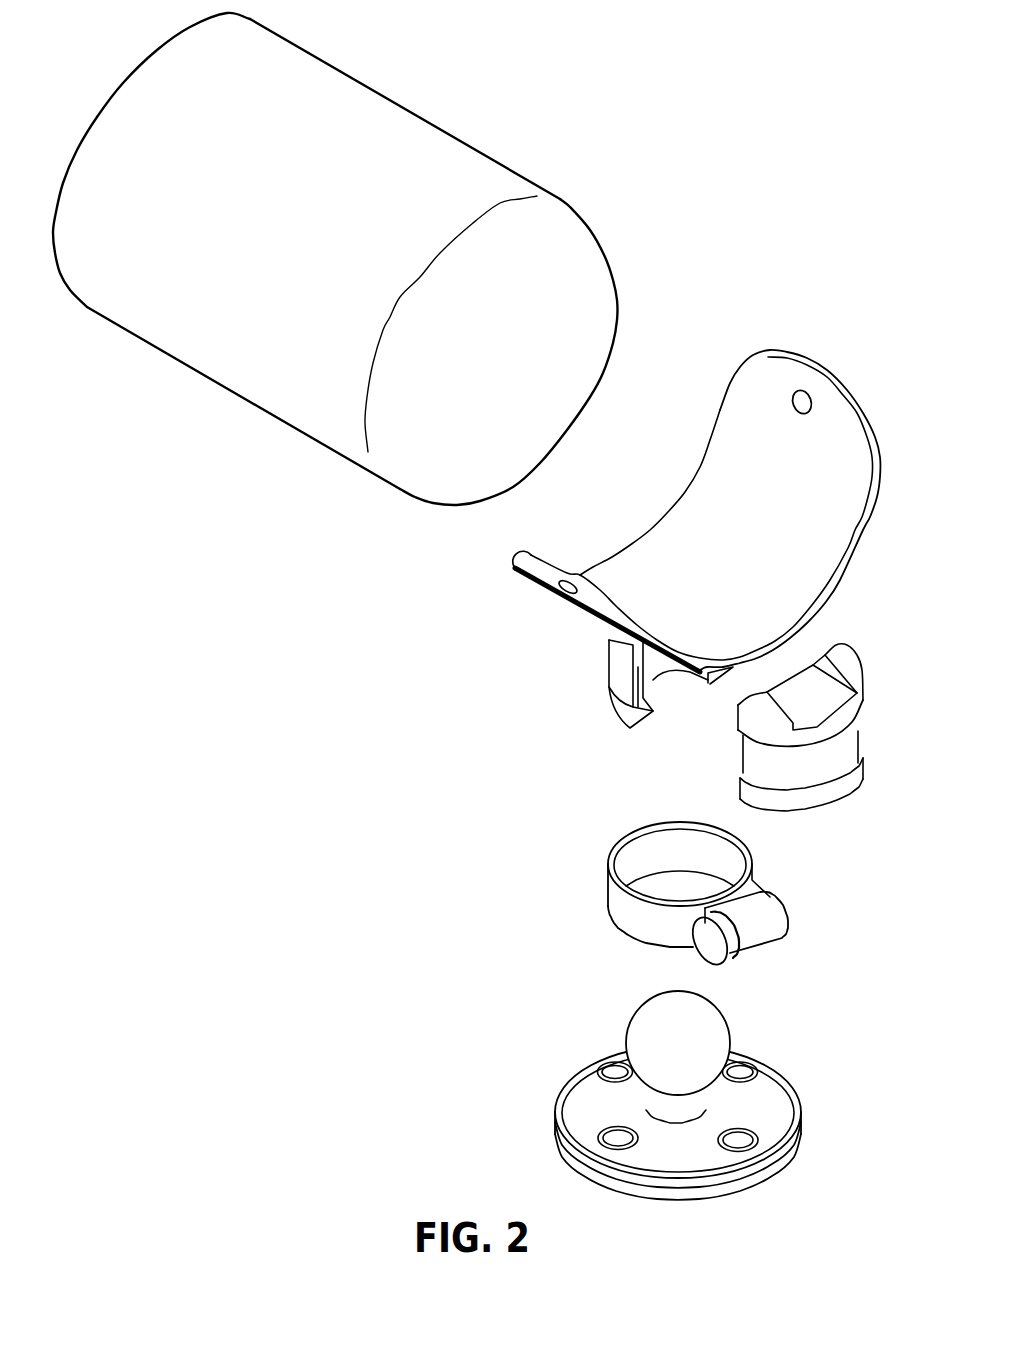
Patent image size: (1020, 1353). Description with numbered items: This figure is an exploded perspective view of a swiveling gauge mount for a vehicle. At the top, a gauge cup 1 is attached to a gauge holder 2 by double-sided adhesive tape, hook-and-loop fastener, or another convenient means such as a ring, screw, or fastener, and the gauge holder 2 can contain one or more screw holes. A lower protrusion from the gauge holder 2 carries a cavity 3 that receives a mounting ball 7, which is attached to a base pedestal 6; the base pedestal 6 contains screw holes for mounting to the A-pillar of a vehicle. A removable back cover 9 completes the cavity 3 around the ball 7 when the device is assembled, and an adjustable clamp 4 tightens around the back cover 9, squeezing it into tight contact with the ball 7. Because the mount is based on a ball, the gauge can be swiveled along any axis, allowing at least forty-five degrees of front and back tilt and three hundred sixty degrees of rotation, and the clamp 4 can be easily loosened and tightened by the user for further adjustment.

The gauge cup 1 is at (379, 125).
The gauge holder 2 is at (792, 382).
The cavity 3 is at (663, 674).
The back cover 9 is at (818, 762).
The adjustable clamp 4 is at (770, 917).
The mounting ball 7 is at (642, 1032).
The base pedestal 6 is at (762, 1133).